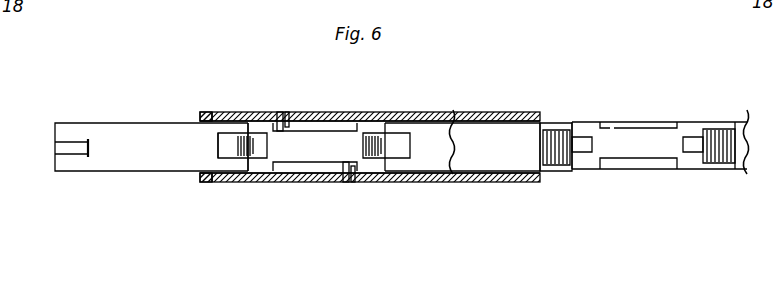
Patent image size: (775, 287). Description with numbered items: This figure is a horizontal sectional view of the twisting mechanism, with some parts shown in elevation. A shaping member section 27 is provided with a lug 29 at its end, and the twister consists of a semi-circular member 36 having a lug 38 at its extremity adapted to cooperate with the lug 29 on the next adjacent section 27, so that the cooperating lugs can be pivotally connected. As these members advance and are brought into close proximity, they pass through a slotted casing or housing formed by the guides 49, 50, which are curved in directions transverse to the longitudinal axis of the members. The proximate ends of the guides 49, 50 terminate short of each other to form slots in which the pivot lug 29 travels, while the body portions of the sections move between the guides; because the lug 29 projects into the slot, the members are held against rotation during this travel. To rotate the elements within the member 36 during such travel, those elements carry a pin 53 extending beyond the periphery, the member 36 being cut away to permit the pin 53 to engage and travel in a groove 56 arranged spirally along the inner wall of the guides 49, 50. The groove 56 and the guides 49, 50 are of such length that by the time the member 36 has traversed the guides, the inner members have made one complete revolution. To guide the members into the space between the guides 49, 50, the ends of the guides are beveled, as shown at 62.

The shaping member section 27 is at (147, 126).
The lug 29 is at (77, 151).
The semi-circular twister member 36 is at (328, 142).
The lug 38 is at (237, 162).
The guide 49 is at (500, 112).
The guide 50 is at (328, 112).
The pin 53 is at (288, 112).
The spiral groove 56 is at (280, 112).
The beveled end 62 is at (205, 118).